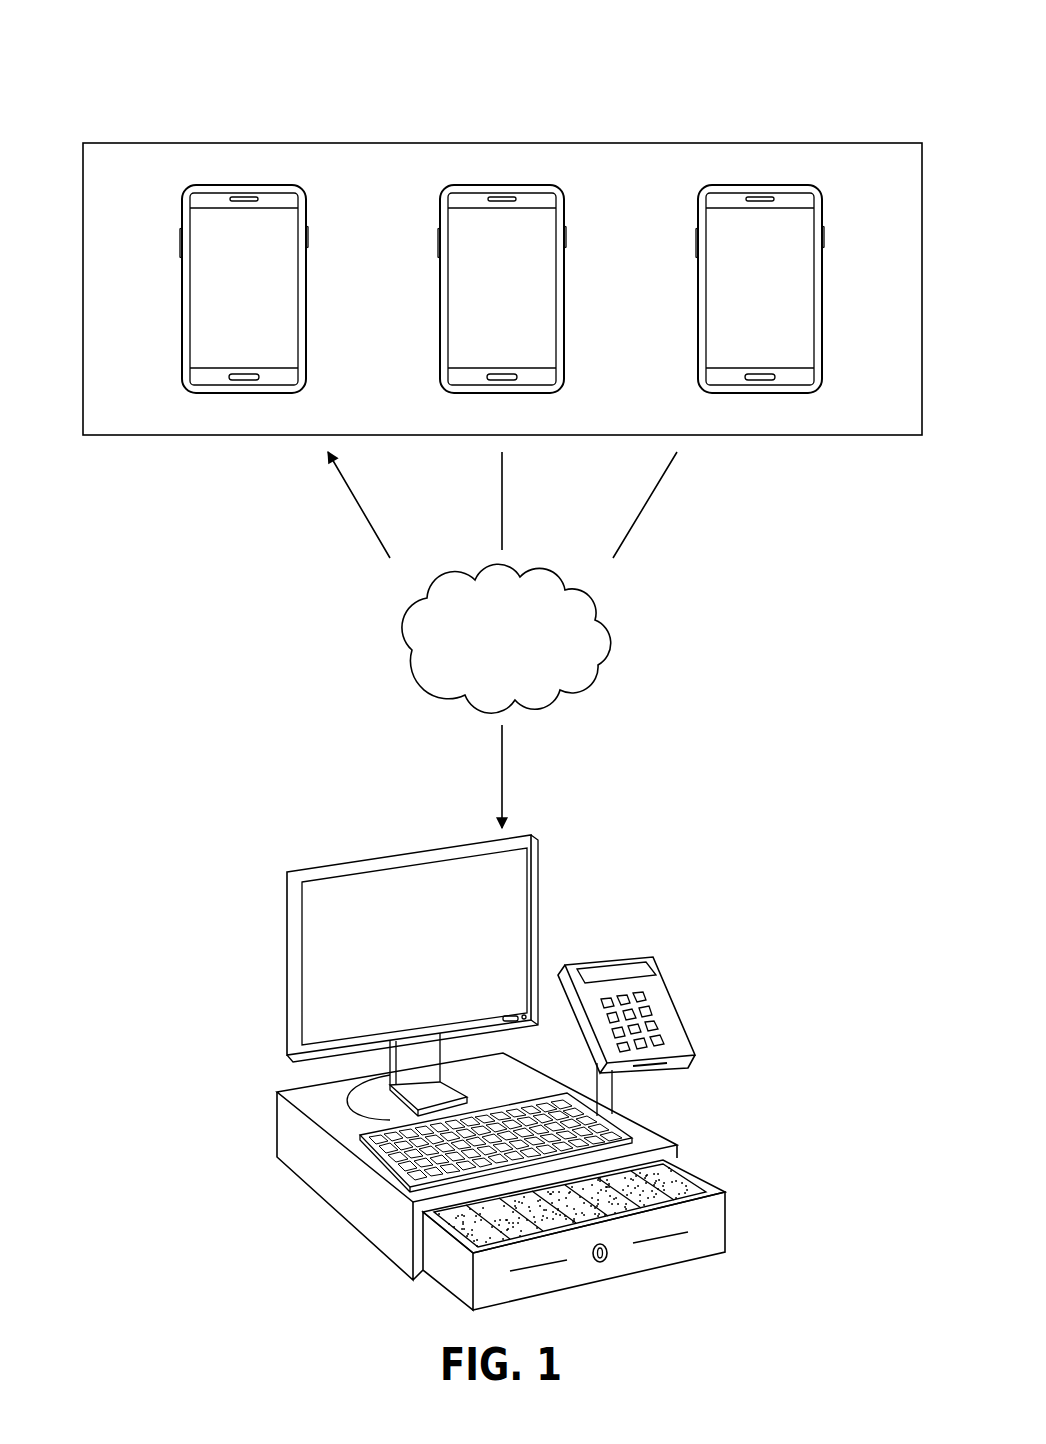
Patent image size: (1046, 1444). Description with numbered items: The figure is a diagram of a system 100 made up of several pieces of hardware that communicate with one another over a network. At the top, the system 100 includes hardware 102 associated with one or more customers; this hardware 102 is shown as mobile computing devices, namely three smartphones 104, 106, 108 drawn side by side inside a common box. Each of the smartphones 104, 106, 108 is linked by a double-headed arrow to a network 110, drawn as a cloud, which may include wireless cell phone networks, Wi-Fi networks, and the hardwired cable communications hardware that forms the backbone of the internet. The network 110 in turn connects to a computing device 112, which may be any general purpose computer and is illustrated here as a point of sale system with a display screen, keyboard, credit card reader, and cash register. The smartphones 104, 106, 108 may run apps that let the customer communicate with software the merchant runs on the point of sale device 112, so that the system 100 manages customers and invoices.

The system 100 is at (316, 84).
The hardware 102 is at (848, 143).
The smartphone 104 is at (307, 288).
The smartphone 106 is at (440, 318).
The smartphone 108 is at (698, 318).
The network 110 is at (400, 652).
The computing device 112 is at (680, 1010).